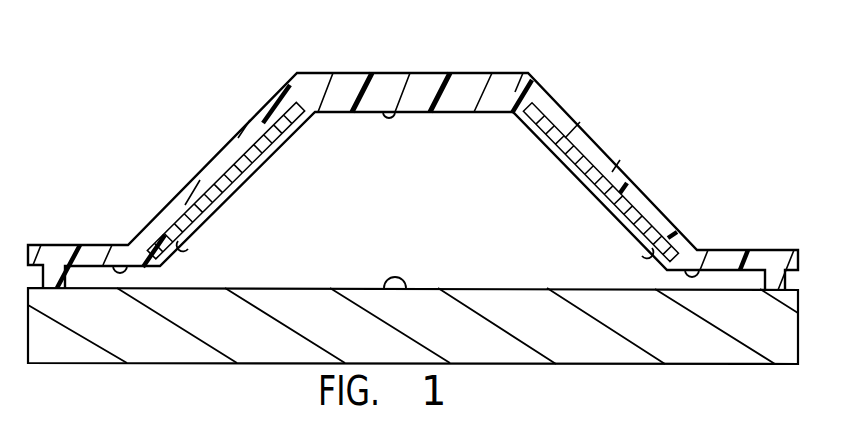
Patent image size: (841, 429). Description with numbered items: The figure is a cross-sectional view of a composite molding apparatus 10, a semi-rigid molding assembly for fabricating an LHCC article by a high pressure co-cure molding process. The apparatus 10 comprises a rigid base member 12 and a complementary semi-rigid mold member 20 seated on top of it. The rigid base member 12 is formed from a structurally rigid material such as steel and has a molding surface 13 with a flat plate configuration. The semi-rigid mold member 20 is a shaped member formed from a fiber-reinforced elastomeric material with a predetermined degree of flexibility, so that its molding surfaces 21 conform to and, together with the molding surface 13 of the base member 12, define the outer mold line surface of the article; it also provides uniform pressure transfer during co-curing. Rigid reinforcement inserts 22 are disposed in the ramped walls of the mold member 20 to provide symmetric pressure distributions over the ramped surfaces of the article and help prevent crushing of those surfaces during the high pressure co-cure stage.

The composite molding apparatus 10 is at (658, 78).
The rigid base member 12 is at (593, 352).
The molding surface 13 is at (406, 288).
The semi-rigid mold member 20 is at (497, 72).
The molding surfaces 21 is at (389, 112).
The rigid reinforcement inserts 22 is at (252, 150).